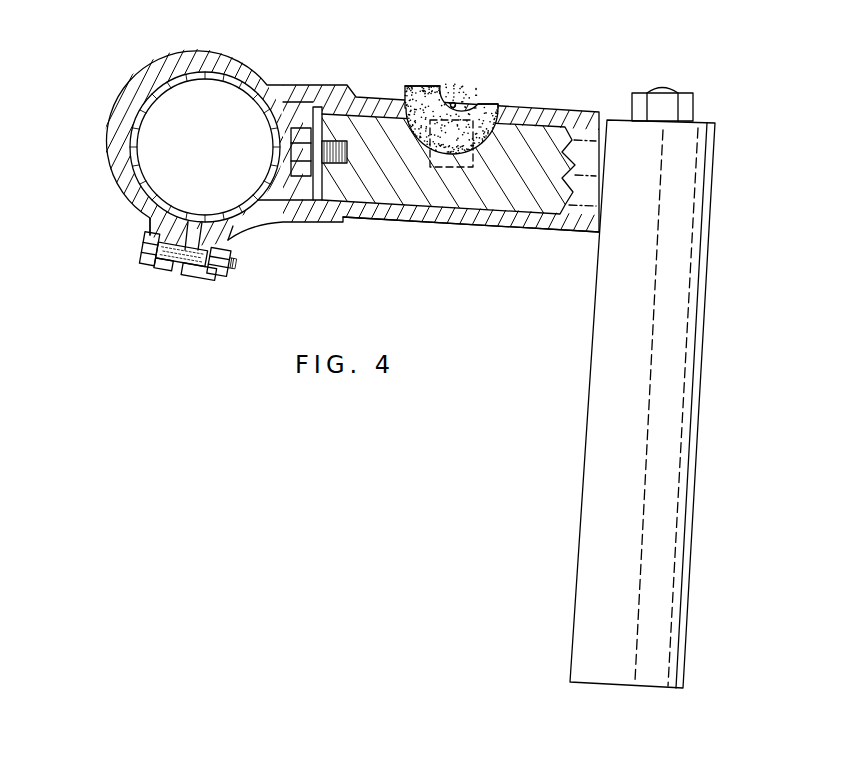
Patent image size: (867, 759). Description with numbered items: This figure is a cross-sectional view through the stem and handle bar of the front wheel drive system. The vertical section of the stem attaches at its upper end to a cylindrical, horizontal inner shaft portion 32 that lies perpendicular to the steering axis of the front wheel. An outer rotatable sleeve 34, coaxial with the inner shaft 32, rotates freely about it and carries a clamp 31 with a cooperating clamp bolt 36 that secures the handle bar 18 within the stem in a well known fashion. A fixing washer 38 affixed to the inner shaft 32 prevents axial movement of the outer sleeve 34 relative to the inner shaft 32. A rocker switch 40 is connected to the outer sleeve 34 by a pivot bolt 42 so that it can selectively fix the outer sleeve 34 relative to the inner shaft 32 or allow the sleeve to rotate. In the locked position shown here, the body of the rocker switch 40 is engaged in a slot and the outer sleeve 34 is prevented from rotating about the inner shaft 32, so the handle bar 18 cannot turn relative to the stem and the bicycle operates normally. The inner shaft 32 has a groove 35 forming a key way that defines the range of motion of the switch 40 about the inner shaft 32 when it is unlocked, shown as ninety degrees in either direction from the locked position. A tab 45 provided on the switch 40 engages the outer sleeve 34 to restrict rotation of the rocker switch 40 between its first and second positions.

The handle bar 18 is at (132, 142).
The clamp 31 is at (163, 273).
The inner shaft portion 32 is at (532, 200).
The outer rotatable sleeve 34 is at (445, 212).
The groove 35 is at (435, 157).
The clamp bolt 36 is at (145, 245).
The fixing washer 38 is at (348, 85).
The rocker switch 40 is at (453, 105).
The pivot bolt 42 is at (497, 98).
The tab 45 is at (415, 85).